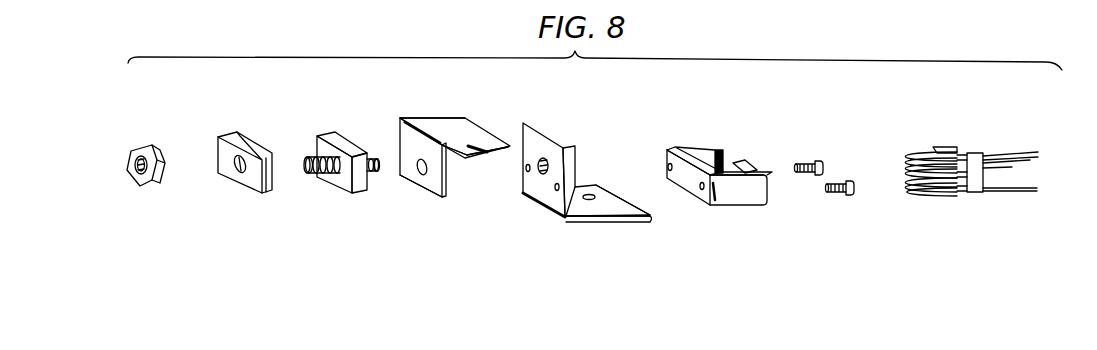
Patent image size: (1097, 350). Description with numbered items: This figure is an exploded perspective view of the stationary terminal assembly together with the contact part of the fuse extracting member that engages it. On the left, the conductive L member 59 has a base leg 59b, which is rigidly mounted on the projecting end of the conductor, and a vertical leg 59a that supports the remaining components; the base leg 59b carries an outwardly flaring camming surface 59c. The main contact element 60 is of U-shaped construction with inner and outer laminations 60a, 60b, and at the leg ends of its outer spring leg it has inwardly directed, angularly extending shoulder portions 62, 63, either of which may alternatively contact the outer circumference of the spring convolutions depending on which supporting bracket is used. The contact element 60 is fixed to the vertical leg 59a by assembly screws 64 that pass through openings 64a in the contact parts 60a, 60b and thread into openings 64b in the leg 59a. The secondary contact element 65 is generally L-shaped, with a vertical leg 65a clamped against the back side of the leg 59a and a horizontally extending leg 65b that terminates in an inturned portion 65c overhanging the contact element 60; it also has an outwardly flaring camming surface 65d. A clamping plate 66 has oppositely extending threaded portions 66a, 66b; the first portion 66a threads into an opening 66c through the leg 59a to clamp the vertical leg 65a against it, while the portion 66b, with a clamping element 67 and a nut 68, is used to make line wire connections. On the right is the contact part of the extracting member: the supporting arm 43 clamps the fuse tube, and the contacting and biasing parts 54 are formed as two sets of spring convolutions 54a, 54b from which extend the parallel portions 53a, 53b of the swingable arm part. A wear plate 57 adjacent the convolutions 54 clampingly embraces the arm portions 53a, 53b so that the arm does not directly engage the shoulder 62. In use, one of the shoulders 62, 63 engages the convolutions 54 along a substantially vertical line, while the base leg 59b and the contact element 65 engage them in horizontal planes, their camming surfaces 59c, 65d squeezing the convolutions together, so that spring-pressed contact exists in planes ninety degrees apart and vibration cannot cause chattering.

The supporting arm 43 is at (1010, 170).
The parallel portion of swingable arm part 53a is at (1032, 156).
The parallel portion of swingable arm part 53b is at (1020, 193).
The contacting and biasing parts 54 is at (916, 186).
The first set of spring convolutions 54a is at (905, 151).
The second set of spring convolutions 54b is at (930, 219).
The wear plate 57 is at (990, 182).
The conductive L member 59 is at (605, 219).
The vertical leg of L member 59a is at (577, 158).
The base leg of L member 59b is at (585, 219).
The camming surface 59c is at (652, 210).
The main contact element 60 is at (731, 202).
The inner lamination of main contact element 60a is at (733, 132).
The outer lamination of main contact element 60b is at (682, 163).
The contact shoulder 62 is at (742, 165).
The contact shoulder 63 is at (724, 160).
The assembly screws 64 is at (851, 181).
The openings in contact parts 64a is at (667, 166).
The threaded openings in vertical leg 64b is at (526, 166).
The secondary contact element 65 is at (446, 110).
The vertical leg of secondary contact element 65a is at (443, 192).
The horizontally extending leg of secondary contact element 65b is at (471, 127).
The inturned portion 65c is at (478, 160).
The camming surface 65d is at (500, 151).
The clamping plate 66 is at (358, 188).
The threaded portion 66a is at (372, 158).
The oppositely extending threaded portion 66b is at (310, 158).
The opening in upstanding leg 66c is at (545, 159).
The clamping element 67 is at (257, 186).
The nut 68 is at (150, 185).